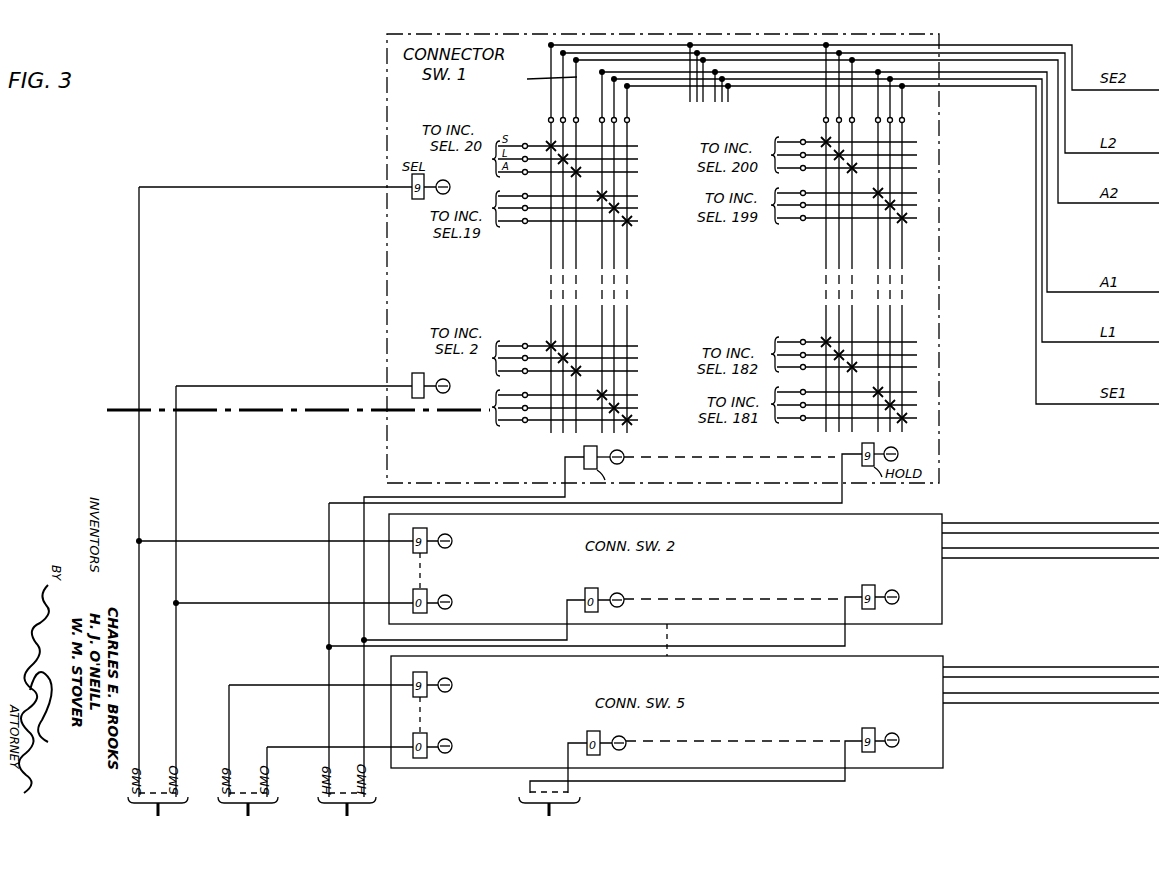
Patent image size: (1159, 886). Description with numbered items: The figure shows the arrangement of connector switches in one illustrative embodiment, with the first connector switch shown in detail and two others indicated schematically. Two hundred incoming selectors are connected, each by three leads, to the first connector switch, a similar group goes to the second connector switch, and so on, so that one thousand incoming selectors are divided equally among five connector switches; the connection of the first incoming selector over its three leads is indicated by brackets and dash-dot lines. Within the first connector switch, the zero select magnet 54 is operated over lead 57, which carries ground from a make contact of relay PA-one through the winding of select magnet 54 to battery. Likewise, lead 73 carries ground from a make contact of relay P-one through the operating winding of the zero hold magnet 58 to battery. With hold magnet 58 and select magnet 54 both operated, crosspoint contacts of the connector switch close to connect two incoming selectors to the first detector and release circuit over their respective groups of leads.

The select magnet 54 is at (425, 397).
The lead 57 is at (178, 633).
The hold magnet 58 is at (584, 453).
The lead 73 is at (367, 497).